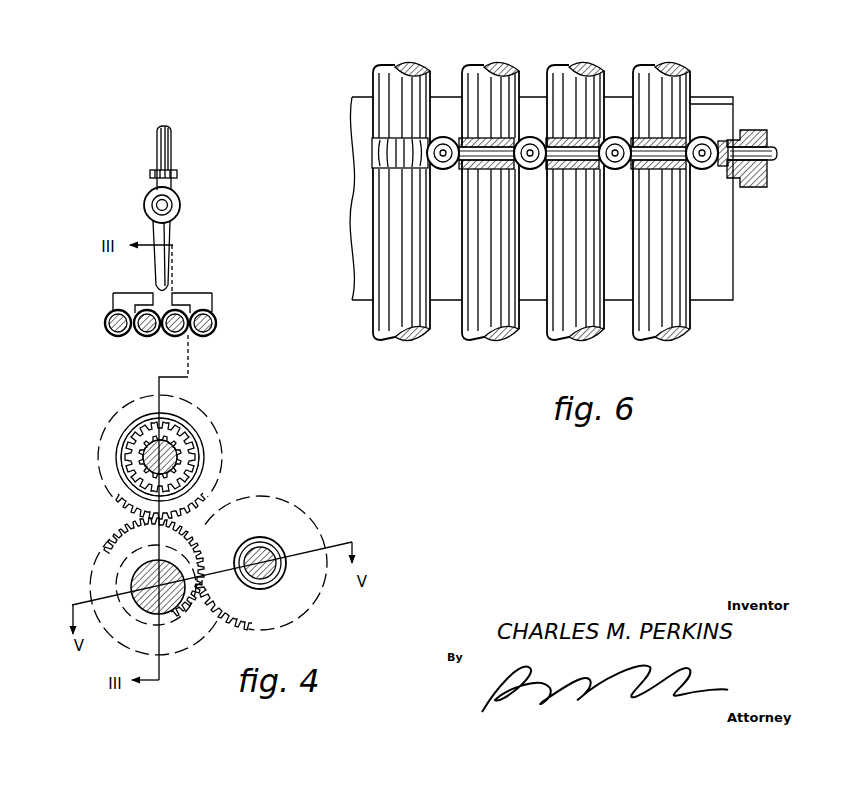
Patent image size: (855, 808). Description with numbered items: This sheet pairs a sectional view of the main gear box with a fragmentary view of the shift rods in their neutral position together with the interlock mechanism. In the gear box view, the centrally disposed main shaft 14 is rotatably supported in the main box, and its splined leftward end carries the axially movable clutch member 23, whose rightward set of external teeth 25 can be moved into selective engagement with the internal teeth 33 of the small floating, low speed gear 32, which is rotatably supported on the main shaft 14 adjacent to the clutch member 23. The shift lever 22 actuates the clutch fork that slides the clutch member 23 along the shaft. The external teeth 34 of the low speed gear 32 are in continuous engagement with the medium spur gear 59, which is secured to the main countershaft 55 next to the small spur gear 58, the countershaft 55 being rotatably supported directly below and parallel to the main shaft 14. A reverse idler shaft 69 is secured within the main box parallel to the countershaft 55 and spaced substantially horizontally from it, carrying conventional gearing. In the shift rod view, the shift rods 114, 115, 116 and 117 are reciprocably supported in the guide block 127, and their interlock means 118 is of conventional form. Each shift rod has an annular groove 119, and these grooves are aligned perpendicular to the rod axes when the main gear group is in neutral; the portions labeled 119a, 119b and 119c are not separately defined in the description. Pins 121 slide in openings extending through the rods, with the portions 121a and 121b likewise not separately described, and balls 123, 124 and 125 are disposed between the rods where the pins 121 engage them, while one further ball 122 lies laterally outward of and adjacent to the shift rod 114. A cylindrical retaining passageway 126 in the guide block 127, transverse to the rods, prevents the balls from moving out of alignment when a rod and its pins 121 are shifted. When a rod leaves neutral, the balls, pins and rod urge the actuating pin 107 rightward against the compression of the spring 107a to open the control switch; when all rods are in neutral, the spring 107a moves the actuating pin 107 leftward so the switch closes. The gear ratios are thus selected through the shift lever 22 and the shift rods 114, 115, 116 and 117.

In FIG. 4, the shift lever 22 is at (157, 236).
In FIG. 4, the main shaft 14 is at (178, 447).
In FIG. 4, the clutch member 23 is at (190, 425).
In FIG. 4, the rightward teeth 25 is at (192, 462).
In FIG. 4, the small floating low speed gear 32 is at (108, 416).
In FIG. 4, the internal teeth 33 is at (126, 457).
In FIG. 4, the external teeth 34 is at (104, 477).
In FIG. 4, the main countershaft 55 is at (137, 568).
In FIG. 4, the small spur gear 58 is at (120, 580).
In FIG. 4, the medium spur gear 59 is at (180, 633).
In FIG. 4, the reverse idler shaft 69 is at (254, 555).
In FIG. 4, the shift rod 114 is at (217, 330).
In FIG. 6, the shift rod 114 is at (680, 312).
In FIG. 4, the shift rod 115 is at (170, 338).
In FIG. 6, the shift rod 115 is at (590, 318).
In FIG. 4, the shift rod 116 is at (136, 337).
In FIG. 6, the shift rod 116 is at (503, 316).
In FIG. 4, the shift rod 117 is at (105, 322).
In FIG. 6, the shift rod 117 is at (418, 315).
In FIG. 6, the actuating pin 107 is at (768, 182).
In FIG. 6, the spring 107a is at (745, 130).
In FIG. 6, the interlock means 118 is at (716, 107).
In FIG. 6, the annular groove 119 is at (632, 172).
In FIG. 6, the shaft section 119a is at (545, 170).
In FIG. 6, the shaft section 119b is at (466, 163).
In FIG. 6, the shaft end 119c is at (372, 148).
In FIG. 6, the pin 121 is at (633, 135).
In FIG. 6, the sleeve 121a is at (549, 138).
In FIG. 6, the sleeve 121b is at (472, 166).
In FIG. 6, the ball 122 is at (702, 172).
In FIG. 6, the ball 123 is at (613, 150).
In FIG. 6, the ball 124 is at (529, 148).
In FIG. 6, the ball 125 is at (438, 137).
In FIG. 6, the cylindrical retaining passageway 126 is at (699, 137).
In FIG. 6, the guide block 127 is at (355, 212).